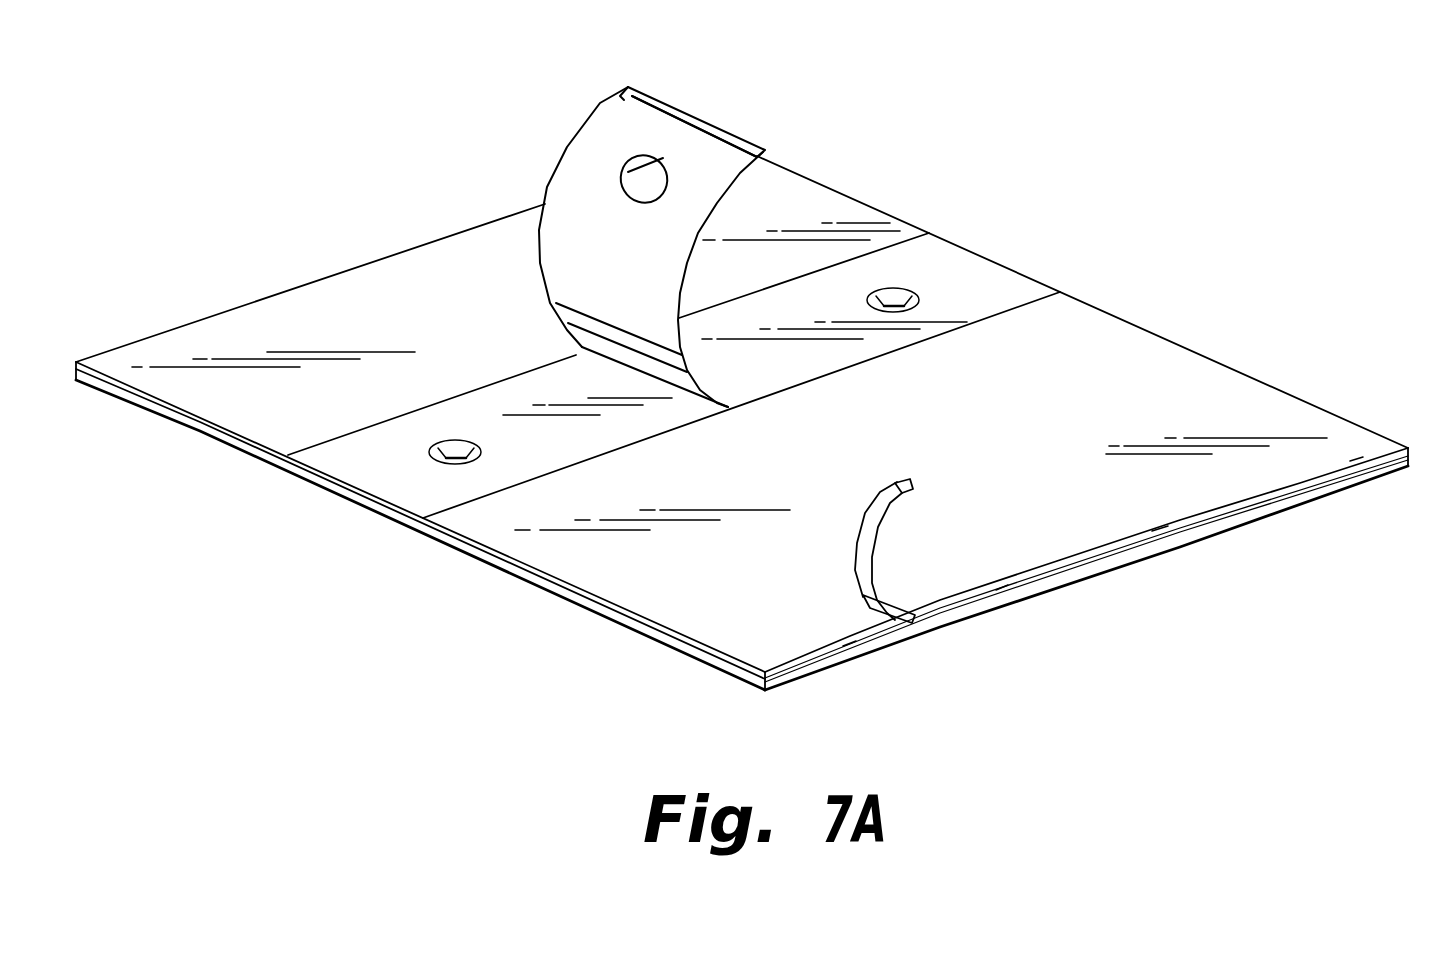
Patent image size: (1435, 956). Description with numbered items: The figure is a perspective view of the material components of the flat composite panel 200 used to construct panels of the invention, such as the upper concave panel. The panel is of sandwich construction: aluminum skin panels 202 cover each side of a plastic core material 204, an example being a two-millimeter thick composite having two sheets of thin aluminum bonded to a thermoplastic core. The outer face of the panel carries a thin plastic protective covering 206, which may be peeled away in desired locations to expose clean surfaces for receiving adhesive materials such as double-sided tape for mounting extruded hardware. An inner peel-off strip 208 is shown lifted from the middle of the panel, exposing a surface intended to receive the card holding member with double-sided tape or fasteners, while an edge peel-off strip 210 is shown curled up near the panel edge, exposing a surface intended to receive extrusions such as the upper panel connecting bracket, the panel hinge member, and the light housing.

The flat composite panel 200 is at (1266, 144).
The aluminum skin panels 202 is at (1073, 568).
The plastic core material 204 is at (830, 660).
The thin plastic protective covering 206 is at (448, 323).
The inner peel-off strip 208 is at (723, 120).
The edge peel-off strip 210 is at (913, 485).